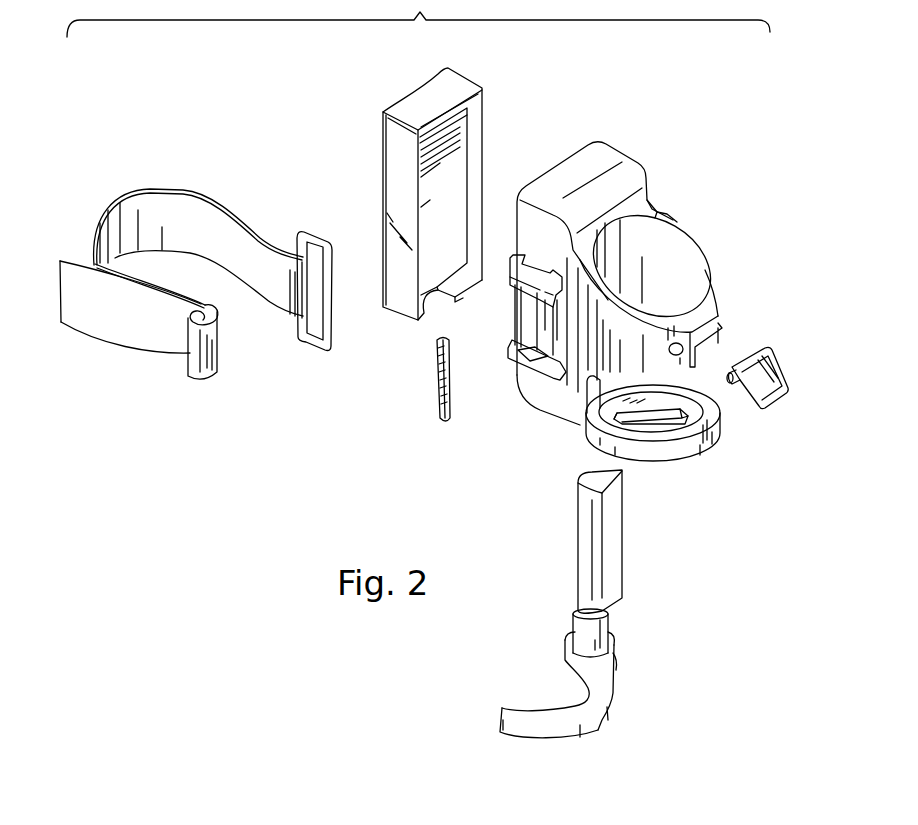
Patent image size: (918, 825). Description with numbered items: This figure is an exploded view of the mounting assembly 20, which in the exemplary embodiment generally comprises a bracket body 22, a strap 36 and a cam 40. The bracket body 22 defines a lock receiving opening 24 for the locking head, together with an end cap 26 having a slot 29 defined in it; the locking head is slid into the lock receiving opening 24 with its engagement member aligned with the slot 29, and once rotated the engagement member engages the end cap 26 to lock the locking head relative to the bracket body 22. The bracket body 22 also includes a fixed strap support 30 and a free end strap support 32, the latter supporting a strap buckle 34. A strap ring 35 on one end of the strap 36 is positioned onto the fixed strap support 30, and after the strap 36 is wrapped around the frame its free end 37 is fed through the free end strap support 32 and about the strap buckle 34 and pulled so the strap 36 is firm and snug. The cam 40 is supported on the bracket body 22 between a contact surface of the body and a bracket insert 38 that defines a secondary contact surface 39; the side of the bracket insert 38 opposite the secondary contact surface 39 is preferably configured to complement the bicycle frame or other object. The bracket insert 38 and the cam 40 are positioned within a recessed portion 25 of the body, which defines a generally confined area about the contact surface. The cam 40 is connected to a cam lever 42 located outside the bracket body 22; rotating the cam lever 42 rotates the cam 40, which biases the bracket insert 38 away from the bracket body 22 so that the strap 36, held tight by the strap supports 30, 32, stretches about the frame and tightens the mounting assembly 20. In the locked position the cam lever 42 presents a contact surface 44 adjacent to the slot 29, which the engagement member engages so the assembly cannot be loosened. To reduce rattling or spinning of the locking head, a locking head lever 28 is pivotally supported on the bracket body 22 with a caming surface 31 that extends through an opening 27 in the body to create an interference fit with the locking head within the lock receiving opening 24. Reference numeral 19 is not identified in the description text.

The housing body 19 is at (635, 310).
The mounting assembly 20 is at (292, 137).
The bracket body 22 is at (633, 166).
The lock receiving opening 24 is at (680, 270).
The recessed portion 25 is at (600, 412).
The end cap 26 is at (670, 465).
The opening 27 is at (720, 339).
The locking head lever 28 is at (777, 372).
The slot 29 is at (672, 428).
The fixed strap support 30 is at (664, 208).
The caming surface 31 is at (737, 390).
The free end strap support 32 is at (530, 367).
The strap buckle 34 is at (438, 426).
The strap ring 35 is at (309, 348).
The strap 36 is at (117, 342).
The free end 37 is at (60, 296).
The bracket insert 38 is at (387, 171).
The secondary contact surface 39 is at (458, 135).
The cam 40 is at (633, 586).
The cam lever 42 is at (603, 727).
The contact surface 44 is at (547, 707).